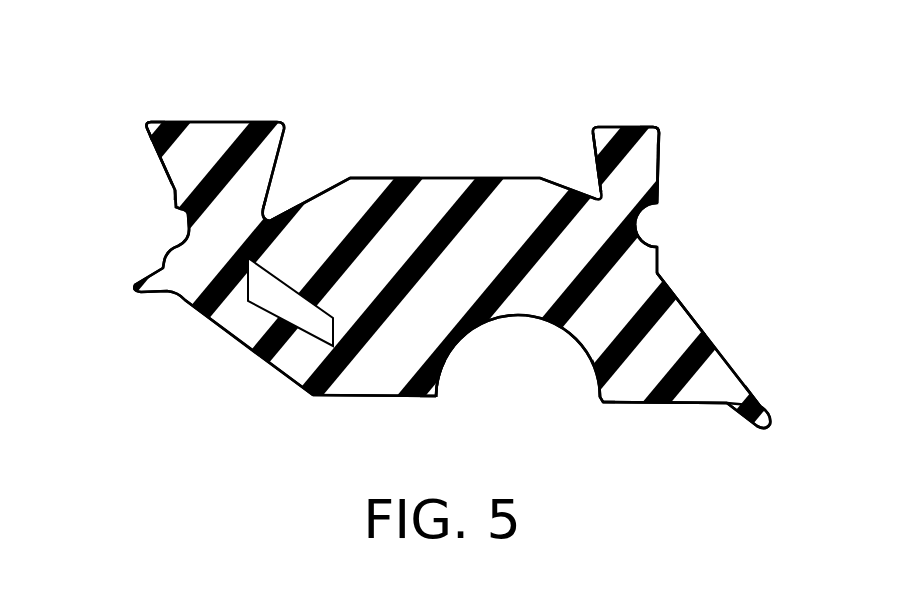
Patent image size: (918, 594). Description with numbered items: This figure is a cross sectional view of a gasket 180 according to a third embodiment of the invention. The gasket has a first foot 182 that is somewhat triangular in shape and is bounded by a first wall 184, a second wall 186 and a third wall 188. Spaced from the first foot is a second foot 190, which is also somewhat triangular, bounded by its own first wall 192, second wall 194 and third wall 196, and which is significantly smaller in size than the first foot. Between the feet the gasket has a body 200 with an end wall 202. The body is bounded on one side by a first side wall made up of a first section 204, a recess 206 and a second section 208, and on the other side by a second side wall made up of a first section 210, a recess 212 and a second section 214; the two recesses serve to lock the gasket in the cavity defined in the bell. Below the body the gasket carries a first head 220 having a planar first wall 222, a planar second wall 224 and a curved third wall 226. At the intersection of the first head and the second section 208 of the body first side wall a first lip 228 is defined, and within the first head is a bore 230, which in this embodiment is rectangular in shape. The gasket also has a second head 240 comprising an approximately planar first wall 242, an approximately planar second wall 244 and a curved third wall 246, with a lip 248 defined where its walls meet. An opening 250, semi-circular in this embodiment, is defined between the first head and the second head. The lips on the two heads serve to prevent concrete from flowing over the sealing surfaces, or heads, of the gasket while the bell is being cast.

The gasket 180 is at (455, 92).
The first foot 182 is at (216, 135).
The first wall 184 is at (164, 165).
The second wall 186 is at (168, 118).
The third wall 188 is at (277, 162).
The second foot 190 is at (659, 138).
The first wall 192 is at (593, 157).
The second wall 194 is at (621, 125).
The third wall 196 is at (658, 155).
The body 200 is at (449, 192).
The end wall 202 is at (382, 178).
The first section 204 is at (174, 206).
The recess 206 is at (187, 226).
The second section 208 is at (166, 257).
The first section 210 is at (658, 190).
The recess 212 is at (641, 230).
The second section 214 is at (658, 265).
The first head 220 is at (304, 367).
The first wall 222 is at (213, 321).
The second wall 224 is at (394, 396).
The third wall 226 is at (437, 388).
The first lip 228 is at (134, 289).
The bore 230 is at (302, 312).
The second head 240 is at (677, 353).
The first wall 242 is at (688, 314).
The second wall 244 is at (633, 404).
The third wall 246 is at (592, 378).
The lip 248 is at (761, 405).
The opening 250 is at (518, 324).